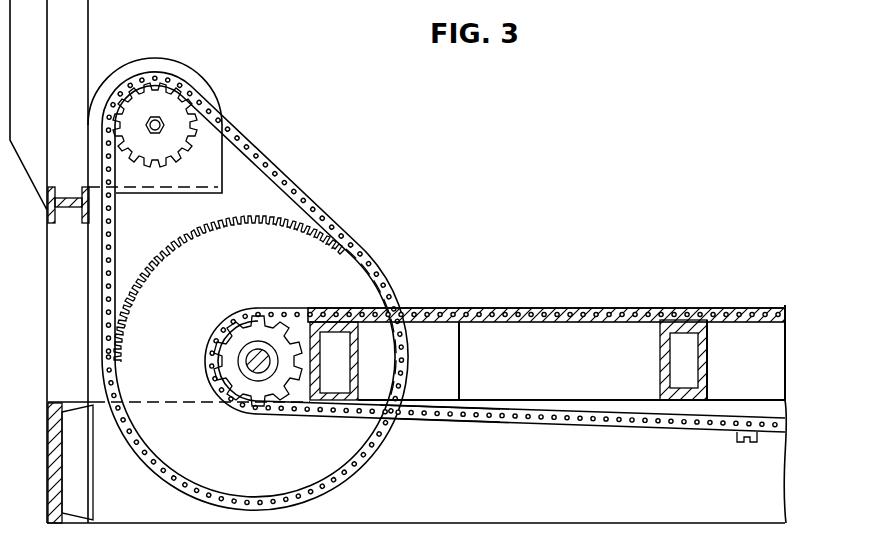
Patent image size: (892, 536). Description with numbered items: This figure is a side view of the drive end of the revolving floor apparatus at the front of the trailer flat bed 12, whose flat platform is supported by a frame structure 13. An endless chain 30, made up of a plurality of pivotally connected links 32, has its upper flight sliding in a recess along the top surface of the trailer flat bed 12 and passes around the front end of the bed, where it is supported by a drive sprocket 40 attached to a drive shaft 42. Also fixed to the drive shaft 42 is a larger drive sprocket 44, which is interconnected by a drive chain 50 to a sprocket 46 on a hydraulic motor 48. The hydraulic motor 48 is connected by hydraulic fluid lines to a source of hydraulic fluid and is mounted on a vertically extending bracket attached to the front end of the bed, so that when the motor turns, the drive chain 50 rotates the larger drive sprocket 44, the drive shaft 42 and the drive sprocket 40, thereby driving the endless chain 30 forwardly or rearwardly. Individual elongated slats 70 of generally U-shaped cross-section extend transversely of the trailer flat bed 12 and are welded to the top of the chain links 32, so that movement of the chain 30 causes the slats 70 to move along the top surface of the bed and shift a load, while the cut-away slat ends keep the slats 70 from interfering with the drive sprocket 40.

The trailer flat bed 12 is at (604, 311).
The frame structure 13 is at (707, 360).
The endless chain 30 is at (560, 424).
The links 32 is at (439, 420).
The drive sprocket 40 is at (228, 362).
The drive shaft 42 is at (250, 348).
The larger drive sprocket 44 is at (172, 455).
The sprocket 46 is at (180, 116).
The hydraulic motor 48 is at (164, 68).
The drive chain 50 is at (268, 168).
The slat 70 is at (741, 440).